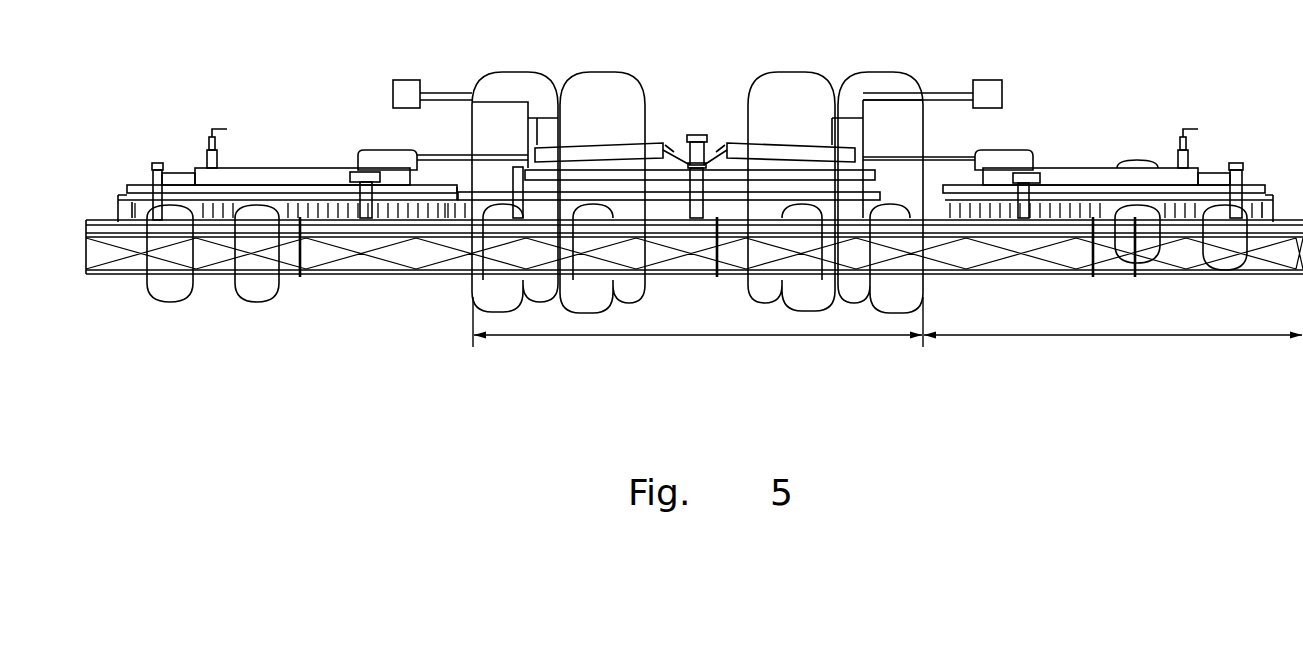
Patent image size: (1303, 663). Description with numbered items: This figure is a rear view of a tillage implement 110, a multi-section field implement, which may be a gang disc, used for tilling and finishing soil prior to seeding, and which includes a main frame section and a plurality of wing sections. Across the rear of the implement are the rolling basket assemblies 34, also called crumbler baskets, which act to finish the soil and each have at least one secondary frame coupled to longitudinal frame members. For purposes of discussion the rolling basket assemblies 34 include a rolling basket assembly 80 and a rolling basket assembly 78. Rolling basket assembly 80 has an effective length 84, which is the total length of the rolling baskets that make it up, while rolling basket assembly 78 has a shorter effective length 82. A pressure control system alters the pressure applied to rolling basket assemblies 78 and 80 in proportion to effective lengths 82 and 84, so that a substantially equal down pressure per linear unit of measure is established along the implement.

The tillage implement 110 is at (259, 107).
The rolling basket assemblies 34 is at (307, 314).
The effective length 84 is at (708, 337).
The rolling basket assembly 80 is at (814, 359).
The effective length 82 is at (1116, 337).
The rolling basket assembly 78 is at (1208, 354).